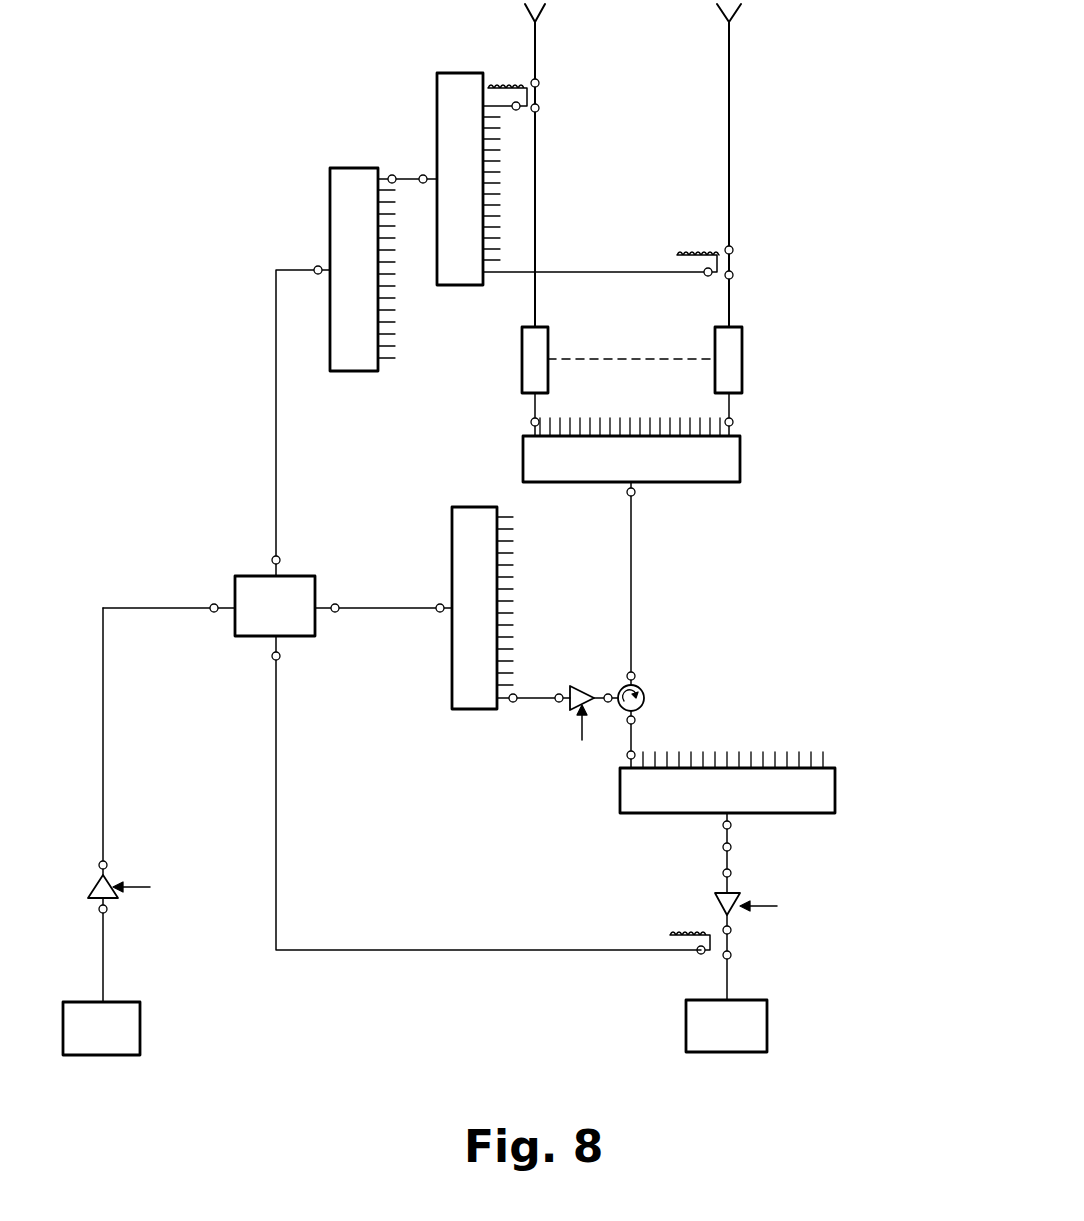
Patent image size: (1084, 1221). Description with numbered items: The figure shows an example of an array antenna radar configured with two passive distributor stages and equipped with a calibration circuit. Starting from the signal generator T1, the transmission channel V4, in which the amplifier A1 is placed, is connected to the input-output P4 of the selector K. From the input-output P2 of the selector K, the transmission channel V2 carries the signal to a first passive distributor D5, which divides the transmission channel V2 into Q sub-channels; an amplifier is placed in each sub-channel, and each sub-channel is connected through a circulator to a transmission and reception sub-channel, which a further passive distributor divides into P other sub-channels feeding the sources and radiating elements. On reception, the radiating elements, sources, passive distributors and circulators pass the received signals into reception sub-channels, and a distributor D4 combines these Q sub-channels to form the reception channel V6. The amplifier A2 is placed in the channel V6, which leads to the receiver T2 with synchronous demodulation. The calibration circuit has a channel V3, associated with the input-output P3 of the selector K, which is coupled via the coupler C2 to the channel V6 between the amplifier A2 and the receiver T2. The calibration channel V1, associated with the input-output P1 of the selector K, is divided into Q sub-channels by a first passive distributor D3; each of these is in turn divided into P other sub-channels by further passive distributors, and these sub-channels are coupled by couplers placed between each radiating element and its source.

The first passive distributor D3 is at (330, 222).
The distributor D4 is at (835, 790).
The reception channel V6 is at (729, 860).
The amplifier A2 is at (760, 892).
The receiver T2 is at (755, 1000).
The coupler C2 is at (680, 930).
The channel of the calibration circuit V3 is at (276, 850).
The input-output of the selector P3 is at (278, 658).
The selector K is at (300, 576).
The channel of the calibration circuit V1 is at (276, 462).
The input-output of the selector P1 is at (272, 558).
The input-output of the selector P4 is at (212, 605).
The transmission channel V2 is at (390, 605).
The input-output of the selector P2 is at (337, 612).
The transmission channel V4 is at (133, 613).
The amplifier A1 is at (118, 877).
The signal generator T1 is at (125, 1002).
The first passive distributor D5 is at (452, 530).